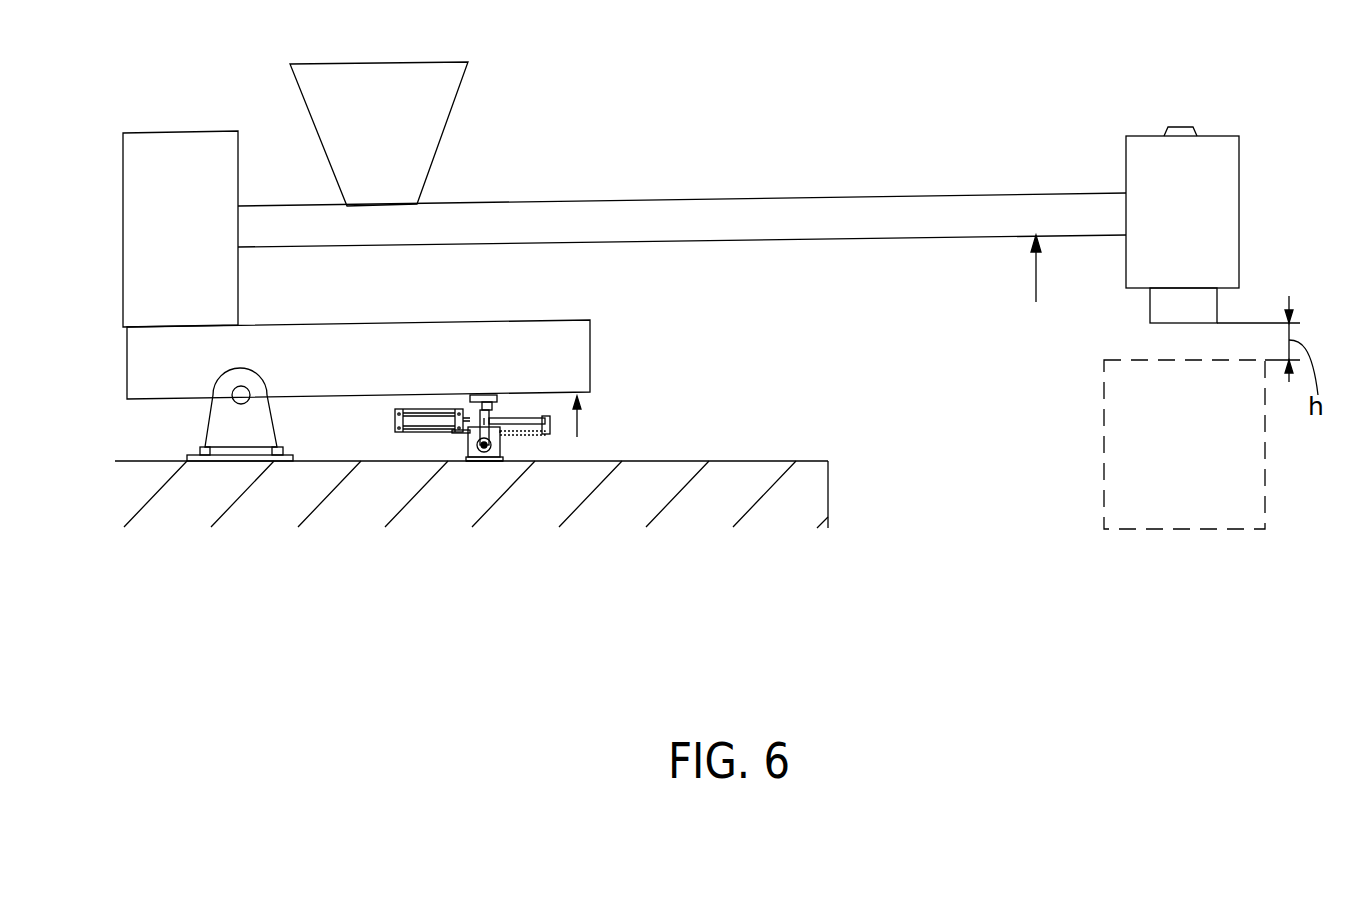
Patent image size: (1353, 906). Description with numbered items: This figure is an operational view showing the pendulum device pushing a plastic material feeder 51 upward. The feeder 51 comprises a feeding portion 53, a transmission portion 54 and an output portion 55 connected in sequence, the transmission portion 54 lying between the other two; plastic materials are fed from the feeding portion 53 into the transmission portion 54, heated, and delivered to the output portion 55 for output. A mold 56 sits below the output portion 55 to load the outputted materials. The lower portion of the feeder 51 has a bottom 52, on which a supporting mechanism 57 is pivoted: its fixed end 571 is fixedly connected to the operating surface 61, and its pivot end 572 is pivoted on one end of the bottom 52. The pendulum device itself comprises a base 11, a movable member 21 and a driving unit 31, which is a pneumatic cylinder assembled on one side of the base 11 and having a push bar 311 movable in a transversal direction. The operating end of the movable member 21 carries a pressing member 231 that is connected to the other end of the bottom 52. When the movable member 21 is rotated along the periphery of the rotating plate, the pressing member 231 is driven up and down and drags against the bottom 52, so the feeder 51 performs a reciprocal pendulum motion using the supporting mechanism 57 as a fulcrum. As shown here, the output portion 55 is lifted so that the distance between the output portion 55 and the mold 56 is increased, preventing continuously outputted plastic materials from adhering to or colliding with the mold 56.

The plastic material feeder 51 is at (155, 194).
The bottom 52 is at (368, 395).
The feeding portion 53 is at (443, 112).
The transmission portion 54 is at (657, 218).
The output portion 55 is at (1210, 303).
The mold 56 is at (1190, 513).
The supporting mechanism 57 is at (220, 425).
The fixed end 571 is at (290, 462).
The pivot end 572 is at (248, 388).
The operating surface 61 is at (738, 462).
The driving unit 31 is at (408, 410).
The push bar 311 is at (525, 418).
The pressing member 231 is at (485, 395).
The movable member 21 is at (493, 435).
The base 11 is at (500, 450).